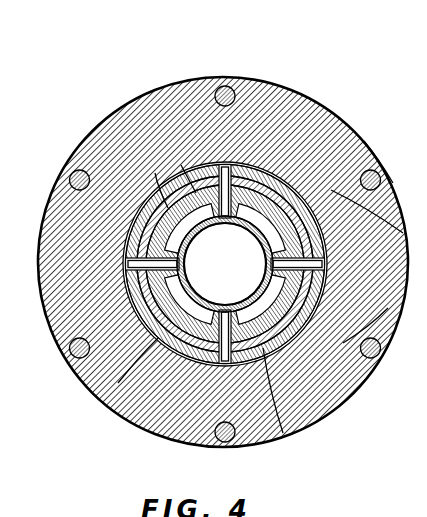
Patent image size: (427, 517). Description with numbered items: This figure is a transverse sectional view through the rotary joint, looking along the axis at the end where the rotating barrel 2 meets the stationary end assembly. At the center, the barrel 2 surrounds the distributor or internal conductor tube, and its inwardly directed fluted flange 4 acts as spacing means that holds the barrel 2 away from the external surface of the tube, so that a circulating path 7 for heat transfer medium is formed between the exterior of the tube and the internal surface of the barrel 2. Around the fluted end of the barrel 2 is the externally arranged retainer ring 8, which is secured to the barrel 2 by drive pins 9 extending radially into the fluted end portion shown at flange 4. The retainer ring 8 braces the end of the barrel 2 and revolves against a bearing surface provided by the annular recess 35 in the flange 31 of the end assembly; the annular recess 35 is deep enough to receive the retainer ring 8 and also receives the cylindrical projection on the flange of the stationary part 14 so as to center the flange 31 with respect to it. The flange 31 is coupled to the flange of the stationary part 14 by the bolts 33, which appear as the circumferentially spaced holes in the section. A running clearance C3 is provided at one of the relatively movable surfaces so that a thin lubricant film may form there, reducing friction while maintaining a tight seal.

The barrel 2 is at (315, 378).
The fluted flange 4 is at (180, 220).
The circulating path 7 is at (147, 165).
The retainer ring 8 is at (268, 140).
The drive pins 9 is at (173, 157).
The stationary part 14 is at (257, 297).
The flange 31 is at (337, 103).
The bolts 33 is at (220, 78).
The annular recess 35 is at (142, 378).
The running clearance C3 is at (356, 133).